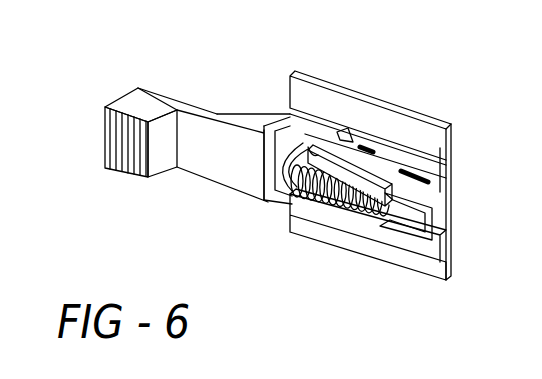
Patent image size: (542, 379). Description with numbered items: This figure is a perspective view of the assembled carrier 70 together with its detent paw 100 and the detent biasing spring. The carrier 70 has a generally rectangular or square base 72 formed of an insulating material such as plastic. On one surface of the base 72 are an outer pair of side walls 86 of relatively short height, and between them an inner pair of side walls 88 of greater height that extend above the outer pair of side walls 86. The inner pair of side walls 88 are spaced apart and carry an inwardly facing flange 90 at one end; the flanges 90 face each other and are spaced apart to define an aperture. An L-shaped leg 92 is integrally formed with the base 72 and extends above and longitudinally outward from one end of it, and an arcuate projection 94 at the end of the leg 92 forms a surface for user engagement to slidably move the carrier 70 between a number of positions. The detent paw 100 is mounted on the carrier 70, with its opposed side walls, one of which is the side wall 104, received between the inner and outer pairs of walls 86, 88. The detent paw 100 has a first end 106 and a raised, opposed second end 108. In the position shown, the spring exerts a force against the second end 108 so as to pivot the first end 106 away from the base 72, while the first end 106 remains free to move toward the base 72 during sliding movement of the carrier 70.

The carrier 70 is at (303, 38).
The base 72 is at (347, 242).
The outer pair of side walls 86 is at (395, 152).
The inner pair of side walls 88 is at (258, 124).
The inwardly facing flange 90 is at (387, 232).
The L-shaped leg 92 is at (200, 130).
The arcuate projection 94 is at (112, 142).
The detent paw 100 is at (260, 167).
The side wall 104 is at (373, 160).
The first end 106 is at (457, 214).
The raised second end 108 is at (272, 190).